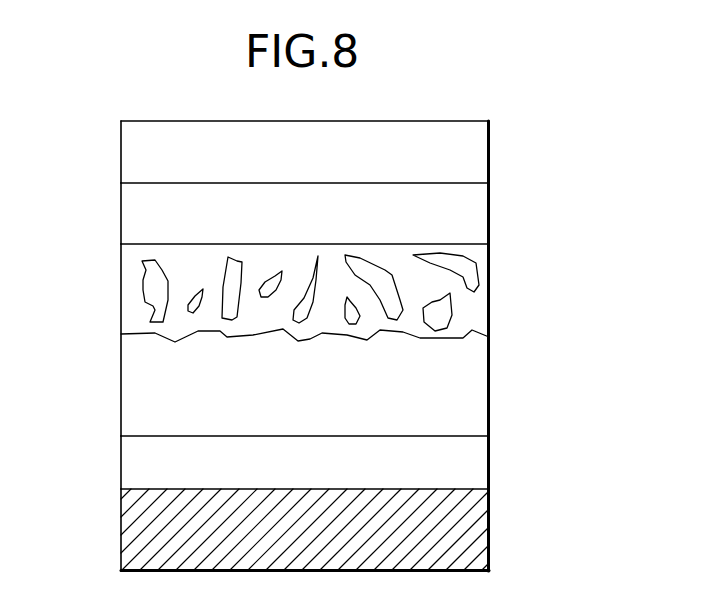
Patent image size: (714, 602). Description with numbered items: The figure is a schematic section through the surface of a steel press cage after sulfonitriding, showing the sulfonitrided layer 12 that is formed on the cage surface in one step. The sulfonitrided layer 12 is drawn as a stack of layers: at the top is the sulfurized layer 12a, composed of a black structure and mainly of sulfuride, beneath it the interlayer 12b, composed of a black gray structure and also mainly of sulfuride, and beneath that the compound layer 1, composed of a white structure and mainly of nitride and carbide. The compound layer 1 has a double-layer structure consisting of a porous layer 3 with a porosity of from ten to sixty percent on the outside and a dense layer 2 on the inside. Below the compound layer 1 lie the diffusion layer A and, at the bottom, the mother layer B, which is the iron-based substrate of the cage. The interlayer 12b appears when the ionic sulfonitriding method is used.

The sulfonitrided layer 12 is at (641, 134).
The sulfurized layer 12a is at (105, 132).
The interlayer 12b is at (105, 194).
The compound layer 1 is at (510, 258).
The dense layer 2 is at (105, 346).
The porous layer 3 is at (105, 255).
The diffusion layer A is at (510, 448).
The mother layer B is at (510, 501).